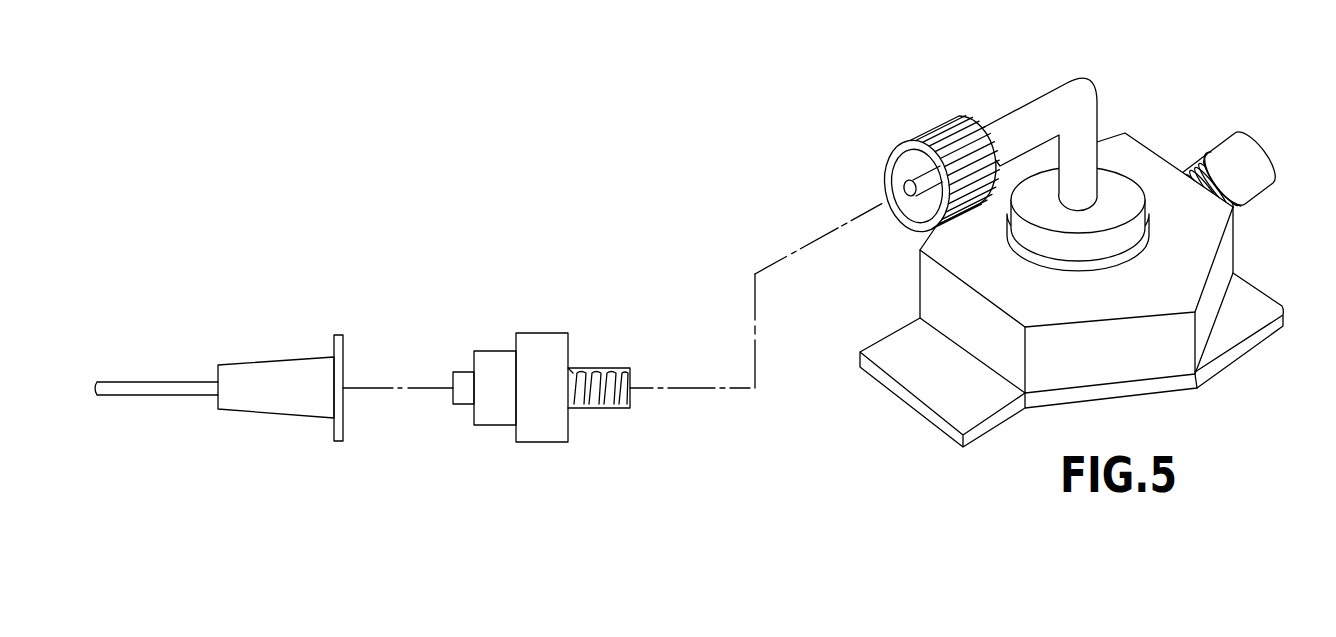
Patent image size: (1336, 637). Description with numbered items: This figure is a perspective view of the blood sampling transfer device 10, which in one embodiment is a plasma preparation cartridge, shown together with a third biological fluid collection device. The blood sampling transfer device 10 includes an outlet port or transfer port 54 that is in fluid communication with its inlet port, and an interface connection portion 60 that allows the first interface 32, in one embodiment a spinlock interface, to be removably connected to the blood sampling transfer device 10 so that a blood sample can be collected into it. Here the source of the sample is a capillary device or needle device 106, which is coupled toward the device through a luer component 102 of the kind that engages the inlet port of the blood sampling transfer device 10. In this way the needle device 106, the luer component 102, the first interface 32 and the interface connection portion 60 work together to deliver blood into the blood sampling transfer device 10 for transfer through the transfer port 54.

The blood sampling transfer device 10 is at (876, 400).
The first interface 32 is at (917, 130).
The transfer port 54 is at (1119, 146).
The interface connection portion 60 is at (1125, 193).
The luer component 102 is at (536, 310).
The needle device 106 is at (307, 312).